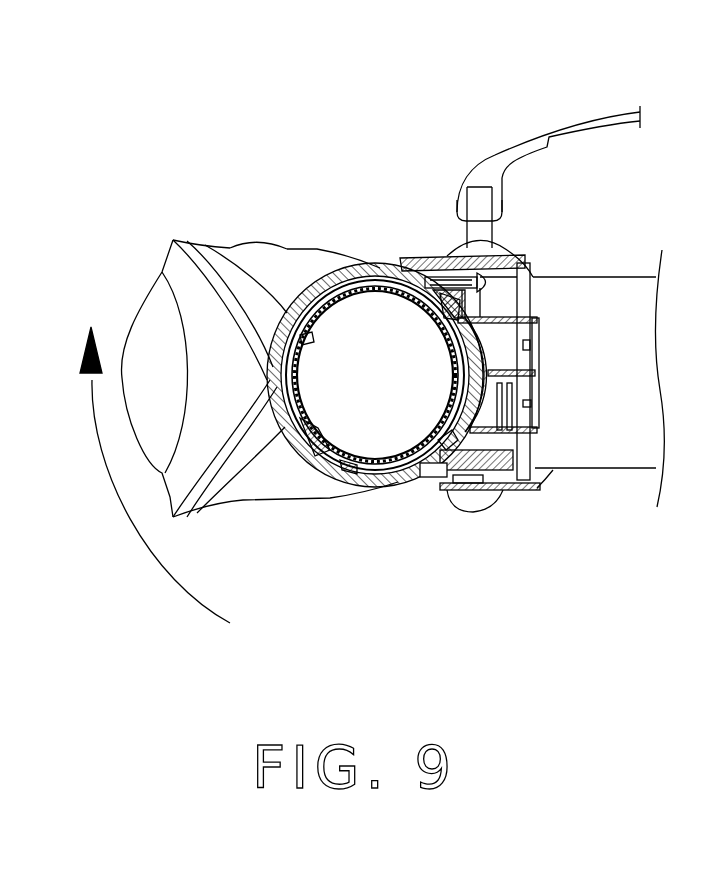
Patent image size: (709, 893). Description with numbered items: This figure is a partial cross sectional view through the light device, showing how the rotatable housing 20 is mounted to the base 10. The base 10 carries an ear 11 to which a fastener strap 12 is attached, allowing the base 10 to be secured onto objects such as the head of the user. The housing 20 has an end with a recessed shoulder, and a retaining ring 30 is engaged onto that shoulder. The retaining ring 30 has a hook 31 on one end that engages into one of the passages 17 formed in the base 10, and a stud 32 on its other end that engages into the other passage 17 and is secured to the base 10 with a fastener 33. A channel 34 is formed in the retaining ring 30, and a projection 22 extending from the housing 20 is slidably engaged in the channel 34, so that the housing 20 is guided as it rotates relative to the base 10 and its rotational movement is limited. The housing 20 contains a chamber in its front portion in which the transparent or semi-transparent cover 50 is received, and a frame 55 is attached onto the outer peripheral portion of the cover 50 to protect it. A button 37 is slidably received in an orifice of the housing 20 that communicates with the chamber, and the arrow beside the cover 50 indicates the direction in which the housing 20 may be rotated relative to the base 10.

The base 10 is at (450, 502).
The ear 11 is at (478, 197).
The fastener strap 12 is at (553, 127).
The passage 17 is at (456, 256).
The housing 20 is at (337, 473).
The projection 22 is at (170, 513).
The retaining ring 30 is at (353, 265).
The hook 31 is at (497, 493).
The stud 32 is at (444, 262).
The fastener 33 is at (517, 258).
The channel 34 is at (303, 457).
The button 37 is at (257, 243).
The cover 50 is at (150, 327).
The frame 55 is at (176, 267).